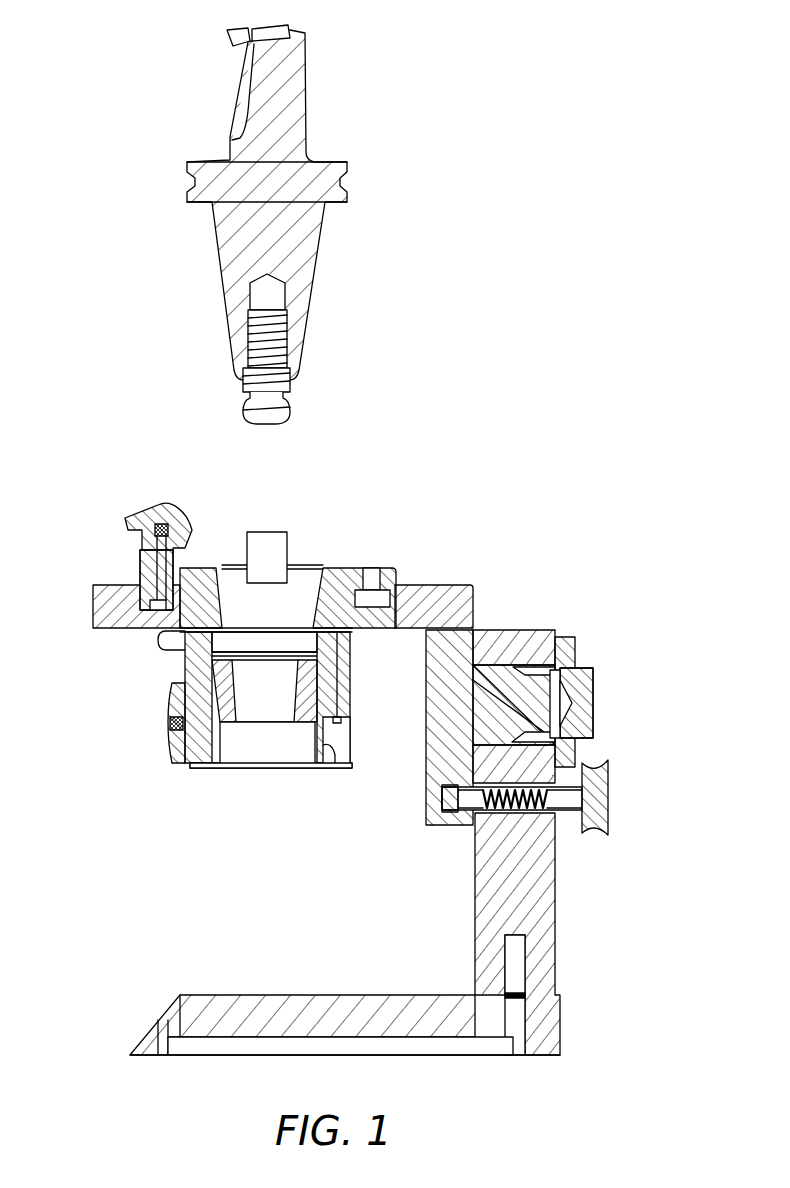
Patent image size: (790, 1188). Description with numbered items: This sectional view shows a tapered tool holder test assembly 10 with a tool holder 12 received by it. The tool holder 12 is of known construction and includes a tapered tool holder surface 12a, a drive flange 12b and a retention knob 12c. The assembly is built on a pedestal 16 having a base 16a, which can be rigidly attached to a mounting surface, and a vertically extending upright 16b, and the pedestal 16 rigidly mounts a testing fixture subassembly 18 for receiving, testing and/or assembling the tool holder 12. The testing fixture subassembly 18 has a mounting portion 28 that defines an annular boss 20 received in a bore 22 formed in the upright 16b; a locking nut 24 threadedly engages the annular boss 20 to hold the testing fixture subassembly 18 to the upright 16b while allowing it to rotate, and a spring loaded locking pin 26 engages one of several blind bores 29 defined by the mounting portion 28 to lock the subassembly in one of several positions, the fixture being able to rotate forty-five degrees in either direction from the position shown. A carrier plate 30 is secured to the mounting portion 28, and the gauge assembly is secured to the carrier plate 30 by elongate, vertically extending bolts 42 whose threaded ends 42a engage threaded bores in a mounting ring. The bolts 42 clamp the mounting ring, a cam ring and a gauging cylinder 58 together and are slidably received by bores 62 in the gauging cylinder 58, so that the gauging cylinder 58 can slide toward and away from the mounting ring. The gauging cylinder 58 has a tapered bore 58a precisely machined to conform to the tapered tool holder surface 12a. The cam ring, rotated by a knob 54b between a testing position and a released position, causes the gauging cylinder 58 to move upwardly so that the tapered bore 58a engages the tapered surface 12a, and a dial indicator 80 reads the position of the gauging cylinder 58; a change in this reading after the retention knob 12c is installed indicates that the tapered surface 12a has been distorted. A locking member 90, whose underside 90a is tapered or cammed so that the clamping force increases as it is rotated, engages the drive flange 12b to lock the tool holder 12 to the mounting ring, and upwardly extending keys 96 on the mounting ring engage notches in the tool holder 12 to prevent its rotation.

The tapered tool holder test assembly 10 is at (600, 507).
The tool holder 12 is at (402, 92).
The tapered tool holder surface 12a is at (318, 262).
The drive flange 12b is at (198, 160).
The retention knob 12c is at (266, 424).
The pedestal 16 is at (646, 756).
The base 16a is at (293, 995).
The upright 16b is at (555, 898).
The testing fixture subassembly 18 is at (460, 536).
The annular boss 20 is at (568, 640).
The bore 22 is at (510, 662).
The locking nut 24 is at (595, 706).
The spring loaded locking pin 26 is at (608, 800).
The mounting portion 28 is at (455, 700).
The blind bores 29 is at (448, 812).
The carrier plate 30 is at (93, 606).
The bolts 42 is at (352, 648).
The threaded ends 42a is at (335, 584).
The knob 54b is at (158, 641).
The gauging cylinder 58 is at (352, 716).
The tapered bore 58a is at (232, 690).
The bores 62 is at (330, 768).
The dial indicator 80 is at (172, 745).
The locking member 90 is at (128, 515).
The underside 90a is at (185, 545).
The keys 96 is at (264, 530).